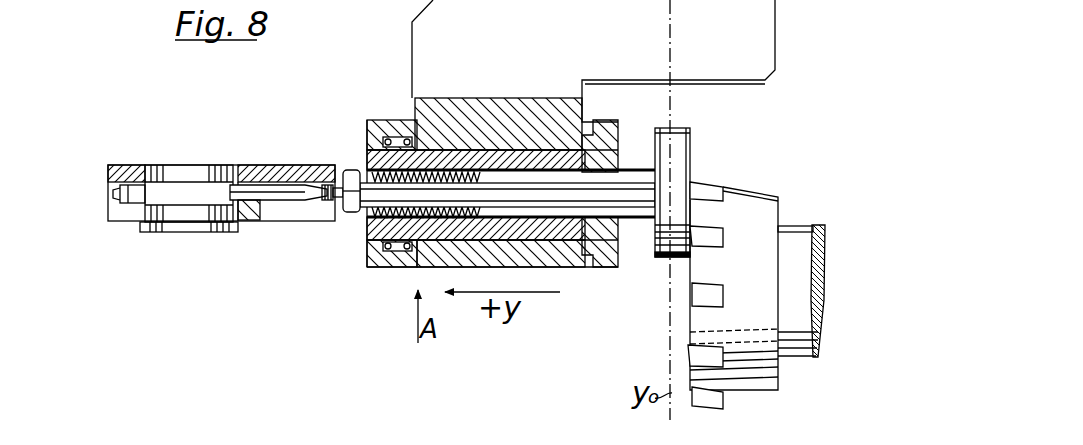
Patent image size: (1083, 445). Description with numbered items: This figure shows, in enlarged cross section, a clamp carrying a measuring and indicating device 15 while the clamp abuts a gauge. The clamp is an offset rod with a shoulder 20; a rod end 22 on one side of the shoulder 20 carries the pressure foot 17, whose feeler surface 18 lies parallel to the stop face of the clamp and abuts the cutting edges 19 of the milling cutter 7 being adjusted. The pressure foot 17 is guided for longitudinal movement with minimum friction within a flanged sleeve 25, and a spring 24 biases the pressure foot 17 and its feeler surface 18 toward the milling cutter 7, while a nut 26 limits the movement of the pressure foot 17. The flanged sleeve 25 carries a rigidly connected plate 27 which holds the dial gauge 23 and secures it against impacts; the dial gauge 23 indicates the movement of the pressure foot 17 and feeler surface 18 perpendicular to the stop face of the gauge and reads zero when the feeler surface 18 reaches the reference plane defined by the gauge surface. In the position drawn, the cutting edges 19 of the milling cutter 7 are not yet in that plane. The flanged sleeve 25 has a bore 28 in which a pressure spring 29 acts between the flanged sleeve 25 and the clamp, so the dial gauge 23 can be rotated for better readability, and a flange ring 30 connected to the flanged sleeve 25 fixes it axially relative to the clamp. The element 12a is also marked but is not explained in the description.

The milling cutter 7 is at (755, 212).
The guide 12a is at (727, 6).
The measuring and indicating device 15 is at (486, 196).
The pressure foot 17 is at (644, 195).
The feeler surface 18 is at (692, 163).
The cutting edges 19 is at (712, 215).
The shoulder 20 is at (582, 27).
The rod end 22 is at (570, 108).
The dial gauge 23 is at (212, 207).
The spring 24 is at (370, 241).
The flanged sleeve 25 is at (465, 152).
The nut 26 is at (352, 168).
The plate 27 is at (263, 140).
The bore 28 is at (405, 133).
The pressure spring 29 is at (385, 150).
The flange ring 30 is at (611, 139).